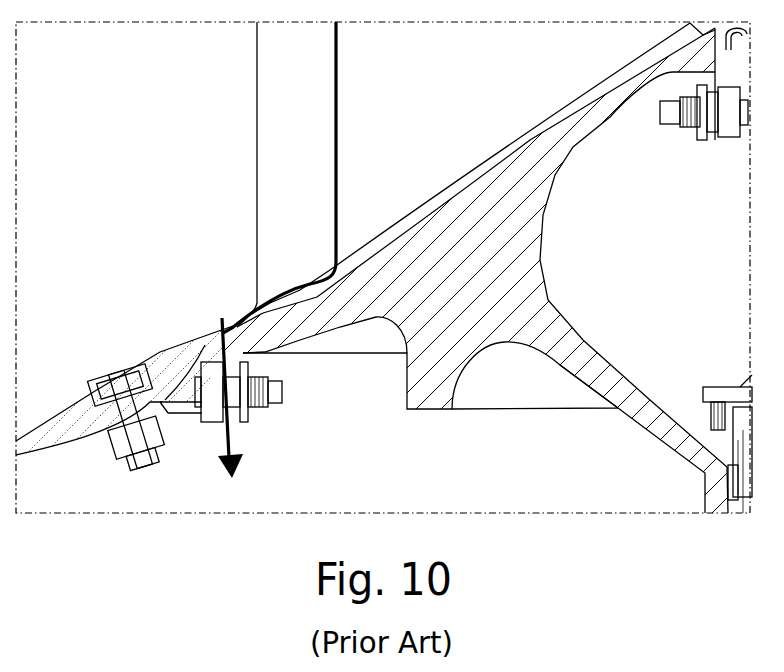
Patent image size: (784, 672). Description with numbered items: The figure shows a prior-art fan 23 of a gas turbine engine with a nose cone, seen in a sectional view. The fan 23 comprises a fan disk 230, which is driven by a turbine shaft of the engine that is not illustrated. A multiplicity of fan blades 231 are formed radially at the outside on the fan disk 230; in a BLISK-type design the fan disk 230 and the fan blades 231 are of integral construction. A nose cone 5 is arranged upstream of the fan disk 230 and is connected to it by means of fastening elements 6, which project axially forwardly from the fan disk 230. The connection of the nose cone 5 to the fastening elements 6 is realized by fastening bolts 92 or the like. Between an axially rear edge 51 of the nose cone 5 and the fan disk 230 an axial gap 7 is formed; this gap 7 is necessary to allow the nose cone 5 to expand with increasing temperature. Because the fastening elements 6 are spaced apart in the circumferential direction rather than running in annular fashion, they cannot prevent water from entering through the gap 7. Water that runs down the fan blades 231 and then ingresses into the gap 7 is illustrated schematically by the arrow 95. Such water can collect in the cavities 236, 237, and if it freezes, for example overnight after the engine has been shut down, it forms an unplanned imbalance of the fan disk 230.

The nose cone 5 is at (78, 405).
The fastening elements 6 is at (172, 420).
The axial gap 7 is at (221, 320).
The fan 23 is at (162, 172).
The axially rear edge 51 is at (213, 338).
The fastening bolts 92 is at (115, 363).
The arrow 95 is at (338, 128).
The fan disk 230 is at (488, 205).
The fan blades 231 is at (257, 125).
The cavity 236 is at (373, 368).
The cavity 237 is at (500, 420).